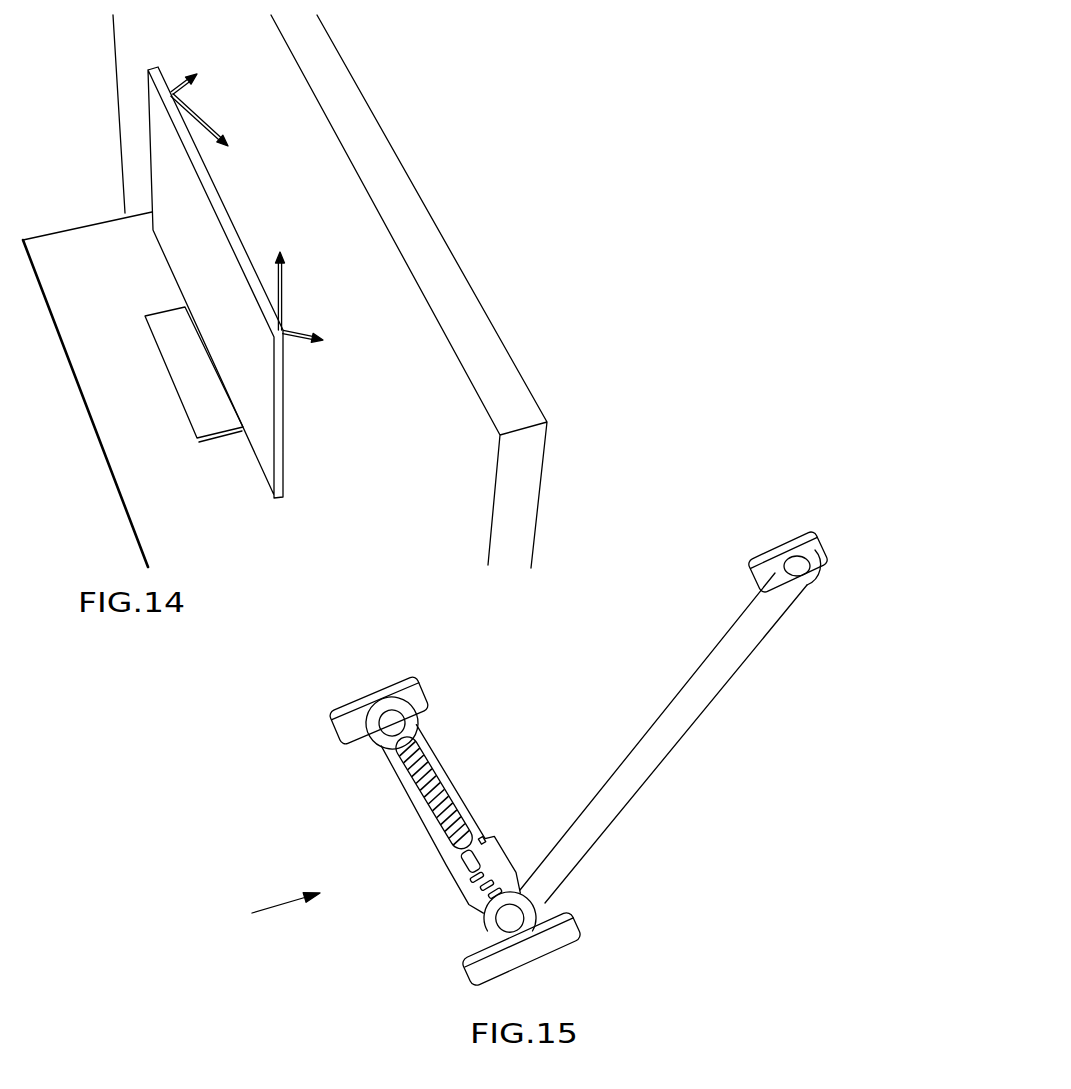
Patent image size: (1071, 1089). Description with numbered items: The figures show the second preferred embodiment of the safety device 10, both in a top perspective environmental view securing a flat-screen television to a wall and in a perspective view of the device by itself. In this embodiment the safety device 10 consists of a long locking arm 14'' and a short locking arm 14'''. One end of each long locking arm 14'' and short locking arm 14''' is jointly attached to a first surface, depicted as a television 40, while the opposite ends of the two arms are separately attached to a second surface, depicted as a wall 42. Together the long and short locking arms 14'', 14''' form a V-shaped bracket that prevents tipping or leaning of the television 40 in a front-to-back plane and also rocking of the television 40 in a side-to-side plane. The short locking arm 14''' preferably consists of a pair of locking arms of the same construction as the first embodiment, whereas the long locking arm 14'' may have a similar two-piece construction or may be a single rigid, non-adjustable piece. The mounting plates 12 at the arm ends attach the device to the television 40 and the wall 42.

In FIG. 14, the safety device 10 is at (212, 103).
In FIG. 15, the safety device 10 is at (274, 920).
In FIG. 15, the mounting plate 12 is at (340, 700).
In FIG. 15, the long locking arm 14'' is at (670, 726).
In FIG. 15, the short locking arm 14''' is at (460, 815).
In FIG. 14, the television 40 is at (226, 292).
In FIG. 14, the wall 42 is at (330, 202).